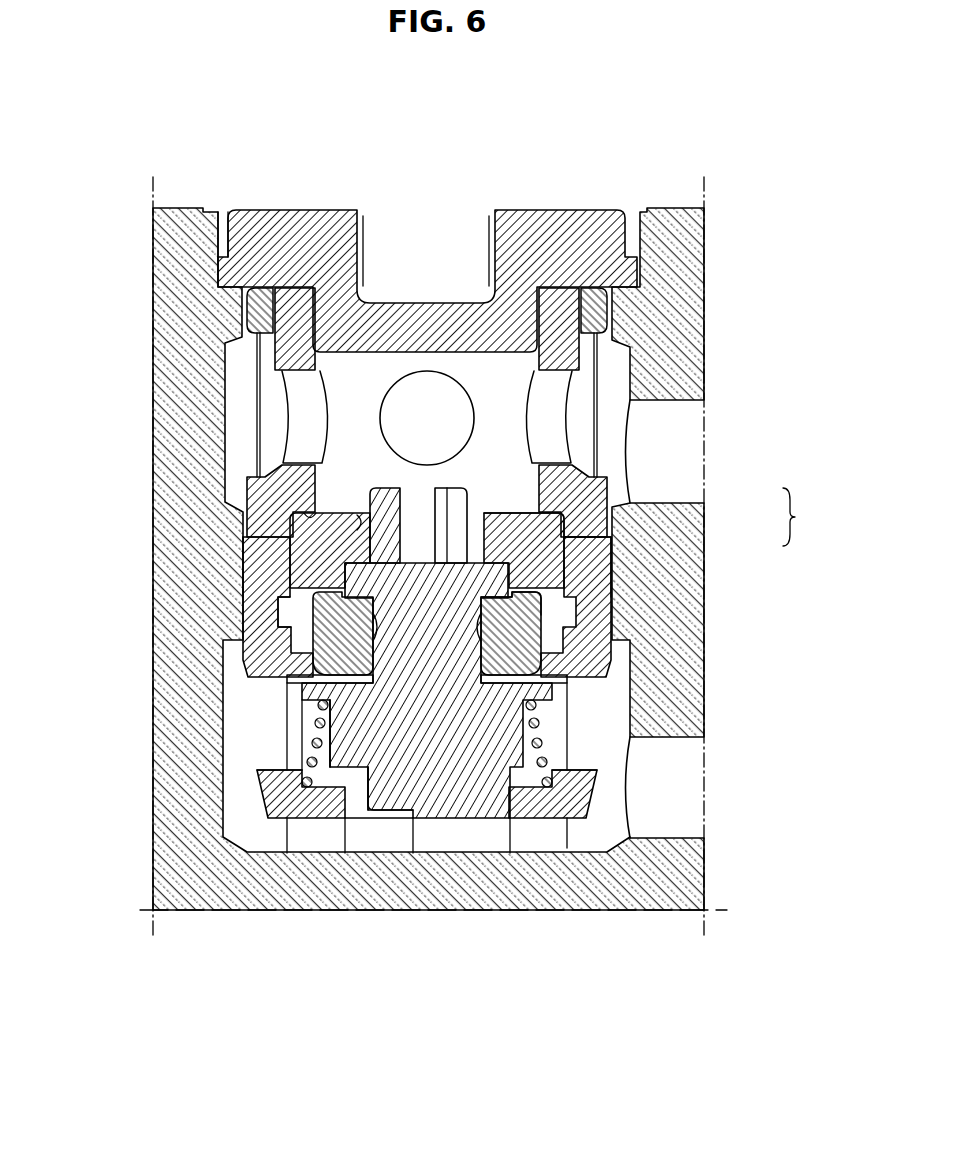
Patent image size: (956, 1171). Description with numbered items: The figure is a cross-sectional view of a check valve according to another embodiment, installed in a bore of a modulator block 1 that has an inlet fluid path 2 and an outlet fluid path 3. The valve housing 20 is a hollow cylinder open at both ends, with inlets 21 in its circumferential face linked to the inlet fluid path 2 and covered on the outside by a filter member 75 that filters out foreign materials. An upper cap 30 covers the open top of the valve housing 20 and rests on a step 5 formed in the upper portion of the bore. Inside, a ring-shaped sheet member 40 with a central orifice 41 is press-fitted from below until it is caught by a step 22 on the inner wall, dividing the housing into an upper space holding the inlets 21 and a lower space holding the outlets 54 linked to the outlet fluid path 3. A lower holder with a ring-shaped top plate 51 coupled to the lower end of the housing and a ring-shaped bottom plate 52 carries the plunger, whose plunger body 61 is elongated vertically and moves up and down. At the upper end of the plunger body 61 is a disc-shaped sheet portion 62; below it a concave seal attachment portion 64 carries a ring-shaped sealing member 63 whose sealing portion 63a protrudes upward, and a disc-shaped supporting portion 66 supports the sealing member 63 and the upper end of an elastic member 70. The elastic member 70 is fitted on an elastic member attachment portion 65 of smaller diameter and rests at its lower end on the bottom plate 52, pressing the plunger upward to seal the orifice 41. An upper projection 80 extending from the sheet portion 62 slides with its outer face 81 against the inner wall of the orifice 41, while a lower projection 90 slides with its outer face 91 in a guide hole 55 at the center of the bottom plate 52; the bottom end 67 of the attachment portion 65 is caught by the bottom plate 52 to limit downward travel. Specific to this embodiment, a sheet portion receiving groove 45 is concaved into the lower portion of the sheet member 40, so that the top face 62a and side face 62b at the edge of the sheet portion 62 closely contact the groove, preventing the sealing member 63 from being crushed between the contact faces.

The modulator block 1 is at (181, 217).
The inlet fluid path 2 is at (661, 416).
The outlet fluid path 3 is at (661, 756).
The step 5 is at (218, 276).
The upper cap 30 is at (562, 210).
The filter member 75 is at (250, 366).
The valve housing 20 is at (227, 472).
The inlet 21 is at (542, 412).
The step 22 is at (312, 516).
The upper projection 80 is at (392, 488).
The outer face 81 is at (358, 520).
The orifice 41 is at (478, 537).
The sheet member 40 is at (240, 540).
The sheet portion receiving groove 45 is at (300, 535).
The sheet portion 62 is at (335, 578).
The top face 62a is at (502, 562).
The side face 62b is at (528, 590).
The sealing member 63 is at (535, 625).
The sealing portion 63a is at (578, 615).
The seal attachment portion 64 is at (272, 610).
The top plate 51 is at (325, 688).
The supporting portion 66 is at (300, 700).
The elastic member 70 is at (318, 740).
The elastic member attachment portion 65 is at (262, 745).
The outlet 54 is at (296, 772).
The bottom plate 52 is at (270, 800).
The bottom end 67 is at (345, 760).
The guide hole 55 is at (368, 812).
The plunger body 61 is at (395, 745).
The lower projection 90 is at (467, 808).
The outer face 91 is at (508, 790).